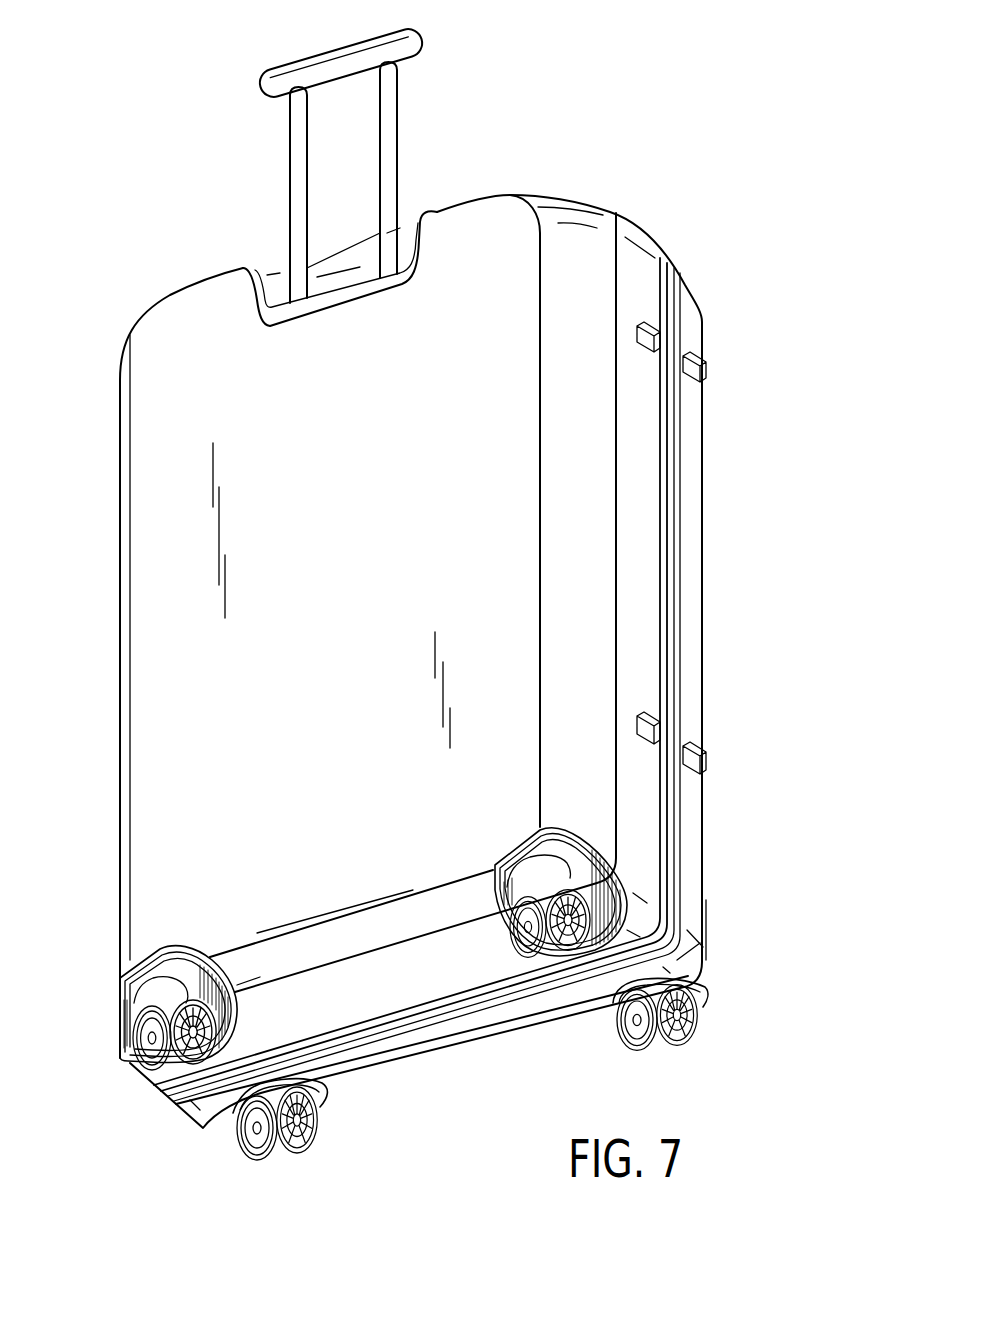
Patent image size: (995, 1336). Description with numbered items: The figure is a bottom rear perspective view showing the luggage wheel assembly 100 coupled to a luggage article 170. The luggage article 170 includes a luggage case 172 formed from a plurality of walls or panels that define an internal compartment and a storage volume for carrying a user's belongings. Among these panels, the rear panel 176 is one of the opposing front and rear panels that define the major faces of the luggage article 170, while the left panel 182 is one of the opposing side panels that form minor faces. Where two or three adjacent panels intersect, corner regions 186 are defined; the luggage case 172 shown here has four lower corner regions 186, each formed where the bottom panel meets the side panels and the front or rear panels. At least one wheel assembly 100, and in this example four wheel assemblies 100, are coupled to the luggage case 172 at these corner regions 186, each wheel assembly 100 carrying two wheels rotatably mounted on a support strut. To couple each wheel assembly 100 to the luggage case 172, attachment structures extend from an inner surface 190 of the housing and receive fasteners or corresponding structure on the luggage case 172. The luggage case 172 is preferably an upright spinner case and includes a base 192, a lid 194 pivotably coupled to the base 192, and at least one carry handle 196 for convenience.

The luggage wheel assembly 100 is at (160, 955).
The luggage article 170 is at (634, 166).
The luggage case 172 is at (180, 317).
The rear panel 176 is at (198, 710).
The left panel 182 is at (650, 498).
The corner region 186 is at (523, 810).
The inner surface 190 is at (195, 527).
The base 192 is at (692, 333).
The lid 194 is at (400, 227).
The carry handle 196 is at (297, 132).